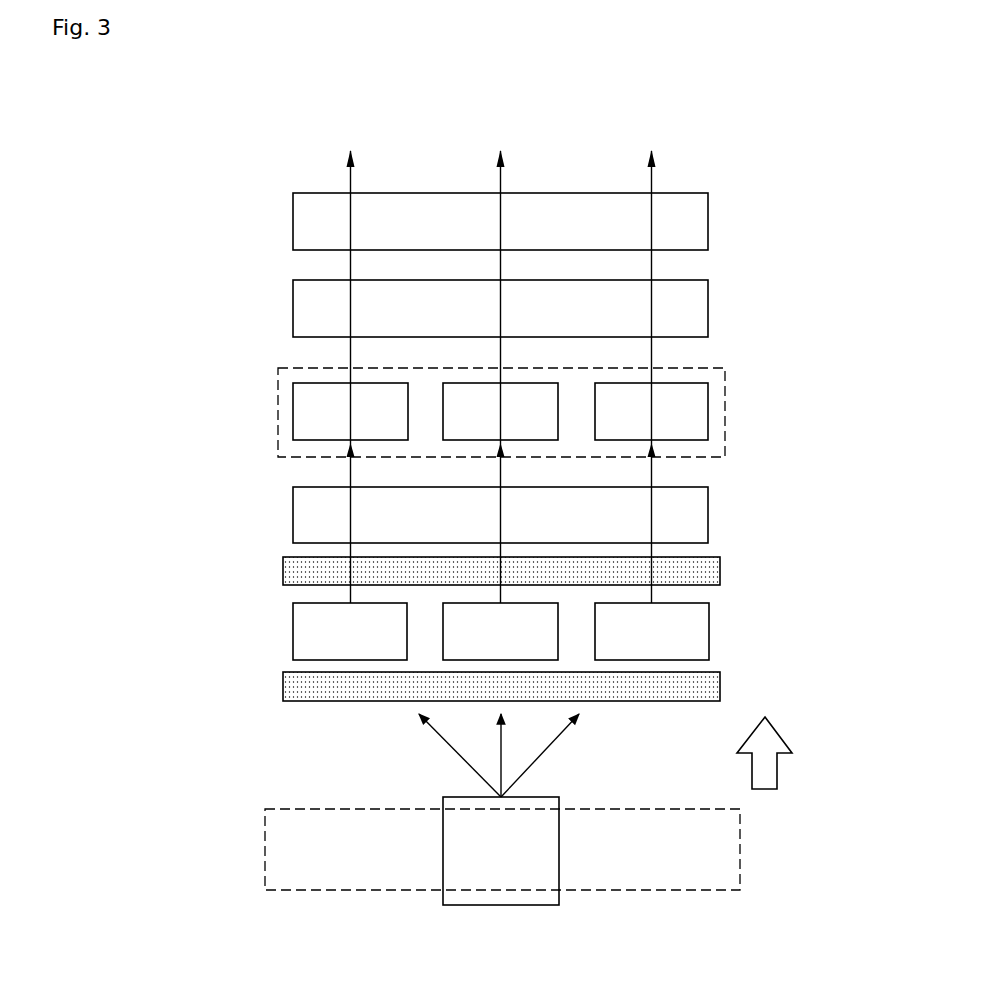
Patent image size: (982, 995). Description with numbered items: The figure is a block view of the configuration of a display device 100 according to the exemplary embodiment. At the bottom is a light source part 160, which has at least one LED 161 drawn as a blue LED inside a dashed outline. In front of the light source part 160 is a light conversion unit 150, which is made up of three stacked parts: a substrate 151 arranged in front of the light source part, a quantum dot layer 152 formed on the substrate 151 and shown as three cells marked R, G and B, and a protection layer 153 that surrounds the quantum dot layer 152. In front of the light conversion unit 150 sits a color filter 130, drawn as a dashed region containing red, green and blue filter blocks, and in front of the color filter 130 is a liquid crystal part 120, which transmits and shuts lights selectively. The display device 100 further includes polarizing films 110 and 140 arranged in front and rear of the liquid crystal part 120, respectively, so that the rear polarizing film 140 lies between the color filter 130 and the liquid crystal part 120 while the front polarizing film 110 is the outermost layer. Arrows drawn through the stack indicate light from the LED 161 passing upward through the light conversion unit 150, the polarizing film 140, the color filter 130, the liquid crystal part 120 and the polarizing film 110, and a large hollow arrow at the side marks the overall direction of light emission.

The display device 100 is at (846, 147).
The polarizing film 110 is at (708, 220).
The liquid crystal part 120 is at (708, 305).
The color filter 130 is at (725, 407).
The polarizing film 140 is at (708, 511).
The light conversion unit 150 is at (189, 573).
The substrate 151 is at (283, 680).
The quantum dot layer 152 is at (282, 633).
The protection layer 153 is at (283, 565).
The light source part 160 is at (740, 847).
The LED 161 is at (559, 852).